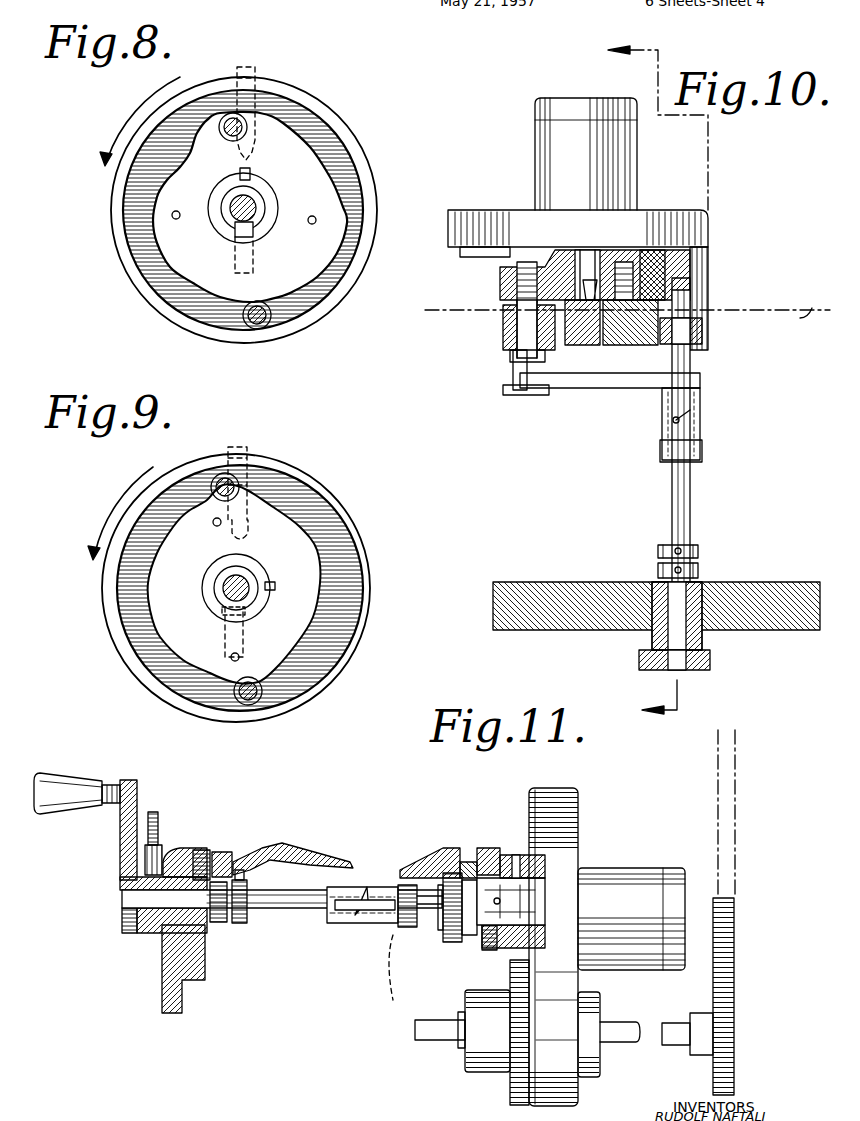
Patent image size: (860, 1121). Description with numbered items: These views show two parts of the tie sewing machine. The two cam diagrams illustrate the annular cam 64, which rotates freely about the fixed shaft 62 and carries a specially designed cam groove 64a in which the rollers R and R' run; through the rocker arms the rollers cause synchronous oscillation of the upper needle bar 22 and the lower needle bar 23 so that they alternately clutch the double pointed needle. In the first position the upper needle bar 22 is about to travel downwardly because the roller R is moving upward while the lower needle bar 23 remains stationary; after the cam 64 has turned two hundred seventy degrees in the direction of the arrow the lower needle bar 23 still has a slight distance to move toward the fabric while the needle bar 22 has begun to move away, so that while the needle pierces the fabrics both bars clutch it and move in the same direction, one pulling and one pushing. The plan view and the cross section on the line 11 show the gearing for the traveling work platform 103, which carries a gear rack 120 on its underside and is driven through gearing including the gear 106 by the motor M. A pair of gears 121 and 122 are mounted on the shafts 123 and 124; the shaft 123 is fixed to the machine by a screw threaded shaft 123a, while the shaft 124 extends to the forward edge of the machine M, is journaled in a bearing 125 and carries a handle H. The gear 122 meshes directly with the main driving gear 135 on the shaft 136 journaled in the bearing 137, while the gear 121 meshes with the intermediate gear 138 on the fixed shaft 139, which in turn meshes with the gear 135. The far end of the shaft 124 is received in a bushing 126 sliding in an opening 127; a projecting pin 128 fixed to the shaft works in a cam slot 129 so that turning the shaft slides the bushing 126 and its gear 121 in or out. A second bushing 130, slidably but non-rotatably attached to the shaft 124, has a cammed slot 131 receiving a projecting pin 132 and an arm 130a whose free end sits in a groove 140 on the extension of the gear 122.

In FIG. 8, the upper needle bar 22 is at (258, 95).
In FIG. 9, the upper needle bar 22 is at (280, 495).
In FIG. 8, the lower needle bar 23 is at (240, 258).
In FIG. 9, the lower needle bar 23 is at (225, 647).
In FIG. 8, the fixed shaft 62 is at (255, 212).
In FIG. 9, the fixed shaft 62 is at (245, 580).
In FIG. 8, the annular cam 64 is at (365, 163).
In FIG. 9, the annular cam 64 is at (356, 545).
In FIG. 8, the cam groove 64a is at (356, 233).
In FIG. 9, the cam groove 64a is at (330, 590).
In FIG. 8, the roller R is at (221, 114).
In FIG. 9, the roller R is at (253, 461).
In FIG. 8, the roller R' is at (269, 335).
In FIG. 9, the roller R' is at (256, 717).
In FIG. 10, the section line 11 is at (645, 380).
In FIG. 10, the gear rack 120 is at (805, 335).
In FIG. 11, the gear rack 120 is at (472, 858).
In FIG. 10, the gear 121 is at (700, 346).
In FIG. 11, the gear 121 is at (447, 937).
In FIG. 10, the gear 122 is at (520, 340).
In FIG. 10, the shaft 123 is at (512, 317).
In FIG. 10, the screw threaded shaft 123a is at (520, 283).
In FIG. 10, the shaft 124 is at (672, 520).
In FIG. 11, the shaft 124 is at (265, 907).
In FIG. 10, the bearing 125 is at (700, 640).
In FIG. 11, the bearing 125 is at (150, 925).
In FIG. 10, the bushing 126 is at (712, 272).
In FIG. 11, the bushing 126 is at (500, 862).
In FIG. 10, the opening 127 is at (705, 222).
In FIG. 11, the opening 127 is at (540, 905).
In FIG. 10, the projecting pin 128 is at (708, 243).
In FIG. 11, the projecting pin 128 is at (486, 948).
In FIG. 10, the cam slot 129 is at (652, 300).
In FIG. 11, the cam slot 129 is at (500, 905).
In FIG. 10, the bushing 130 is at (700, 410).
In FIG. 11, the bushing 130 is at (385, 922).
In FIG. 10, the arm 130a is at (580, 390).
In FIG. 11, the arm 130a is at (392, 979).
In FIG. 10, the cammed slot 131 is at (668, 458).
In FIG. 11, the cammed slot 131 is at (360, 903).
In FIG. 10, the projecting pin 132 is at (672, 424).
In FIG. 11, the projecting pin 132 is at (365, 893).
In FIG. 10, the main driving gear 135 is at (567, 338).
In FIG. 10, the shaft 136 is at (558, 268).
In FIG. 10, the bearing 137 is at (562, 265).
In FIG. 10, the intermediate gear 138 is at (642, 338).
In FIG. 10, the fixed shaft 139 is at (640, 290).
In FIG. 10, the groove 140 is at (505, 392).
In FIG. 10, the motor M is at (582, 612).
In FIG. 11, the motor M is at (165, 978).
In FIG. 11, the handle H is at (75, 790).
In FIG. 11, the traveling work platform 103 is at (440, 850).
In FIG. 11, the gear 106 is at (737, 805).